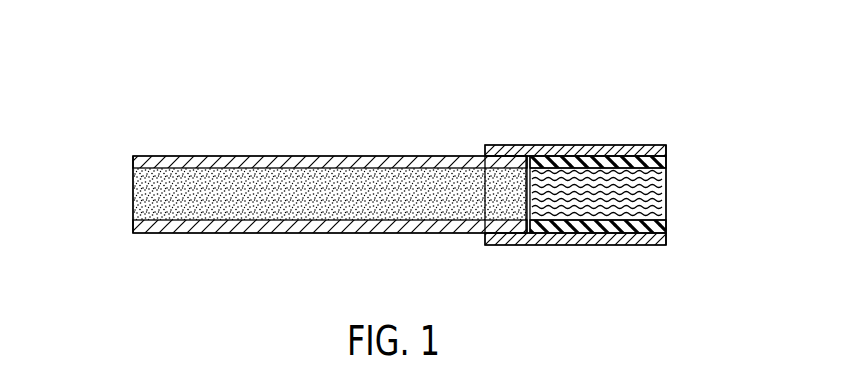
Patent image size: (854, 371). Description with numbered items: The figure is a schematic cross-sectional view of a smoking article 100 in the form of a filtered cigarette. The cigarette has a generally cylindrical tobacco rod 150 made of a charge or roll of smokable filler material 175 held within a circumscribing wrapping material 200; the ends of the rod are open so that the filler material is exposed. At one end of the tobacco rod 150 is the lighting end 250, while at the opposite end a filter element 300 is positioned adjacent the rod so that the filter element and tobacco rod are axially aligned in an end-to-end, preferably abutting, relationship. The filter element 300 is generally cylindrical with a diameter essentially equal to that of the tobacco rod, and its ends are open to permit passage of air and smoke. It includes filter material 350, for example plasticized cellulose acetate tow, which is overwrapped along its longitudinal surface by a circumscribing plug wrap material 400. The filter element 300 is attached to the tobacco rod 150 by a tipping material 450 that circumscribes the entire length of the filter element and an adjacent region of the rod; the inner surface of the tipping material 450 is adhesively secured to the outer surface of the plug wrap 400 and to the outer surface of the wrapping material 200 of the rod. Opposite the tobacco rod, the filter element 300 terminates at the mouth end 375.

The smoking article 100 is at (394, 157).
The tobacco rod 150 is at (296, 177).
The smokable filler material 175 is at (362, 213).
The wrapping material 200 is at (300, 157).
The lighting end 250 is at (128, 199).
The filter element 300 is at (634, 242).
The filter material 350 is at (598, 222).
The mouth end 375 is at (667, 193).
The plug wrap material 400 is at (604, 197).
The tipping material 450 is at (538, 145).